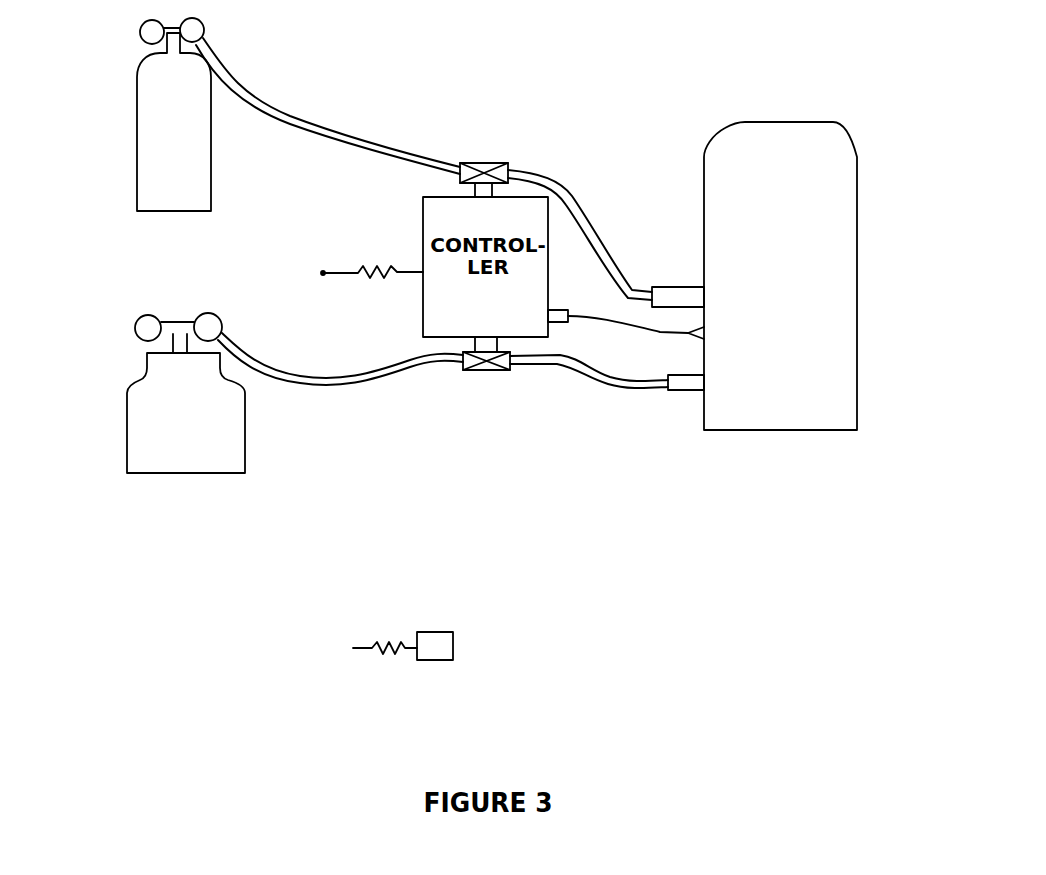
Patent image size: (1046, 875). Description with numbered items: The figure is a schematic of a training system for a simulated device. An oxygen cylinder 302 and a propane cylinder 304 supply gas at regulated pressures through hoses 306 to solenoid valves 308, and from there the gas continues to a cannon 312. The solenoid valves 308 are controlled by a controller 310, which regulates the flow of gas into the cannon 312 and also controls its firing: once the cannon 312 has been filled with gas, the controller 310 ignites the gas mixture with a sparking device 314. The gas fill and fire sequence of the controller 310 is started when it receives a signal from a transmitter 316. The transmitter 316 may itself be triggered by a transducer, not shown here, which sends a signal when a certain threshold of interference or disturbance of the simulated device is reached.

The oxygen cylinder 302 is at (133, 131).
The propane cylinder 304 is at (115, 418).
The hoses 306 is at (323, 119).
The solenoid valves 308 is at (482, 152).
The controller 310 is at (372, 250).
The cannon 312 is at (872, 163).
The sparking device 314 is at (640, 336).
The transmitter 316 is at (433, 622).